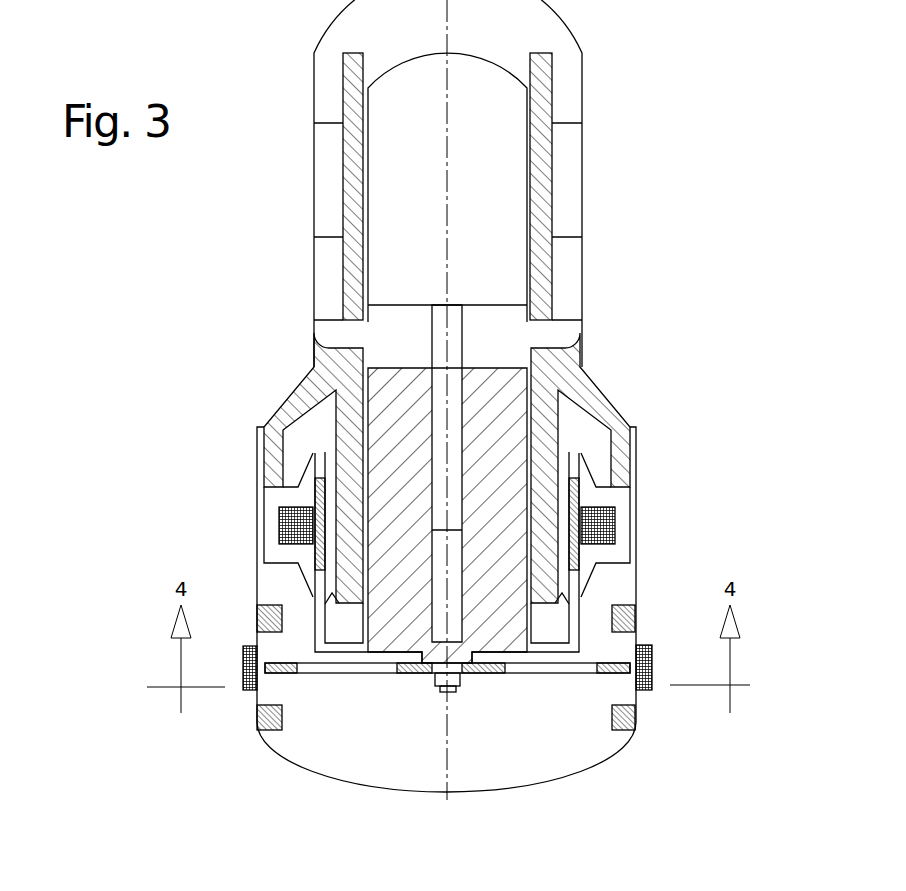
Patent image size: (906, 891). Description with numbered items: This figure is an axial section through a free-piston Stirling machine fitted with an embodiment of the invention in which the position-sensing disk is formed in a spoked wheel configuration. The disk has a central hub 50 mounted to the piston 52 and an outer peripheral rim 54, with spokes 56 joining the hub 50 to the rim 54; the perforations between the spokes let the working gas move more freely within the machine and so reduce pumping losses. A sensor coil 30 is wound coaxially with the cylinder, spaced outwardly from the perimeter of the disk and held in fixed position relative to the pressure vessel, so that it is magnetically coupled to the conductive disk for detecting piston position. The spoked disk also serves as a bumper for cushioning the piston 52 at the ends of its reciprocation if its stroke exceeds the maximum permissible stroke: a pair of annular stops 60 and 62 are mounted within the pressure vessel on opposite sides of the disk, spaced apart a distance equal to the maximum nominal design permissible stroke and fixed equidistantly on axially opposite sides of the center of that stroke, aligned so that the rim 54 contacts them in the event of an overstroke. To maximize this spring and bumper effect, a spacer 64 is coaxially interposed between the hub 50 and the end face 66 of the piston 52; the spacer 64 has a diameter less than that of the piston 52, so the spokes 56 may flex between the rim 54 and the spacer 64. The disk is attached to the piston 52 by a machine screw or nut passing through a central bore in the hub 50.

The sensor coil 30 is at (243, 645).
The central hub 50 is at (433, 657).
The piston 52 is at (490, 407).
The outer peripheral rim 54 is at (630, 675).
The spokes 56 is at (330, 667).
The annular stop 60 is at (625, 720).
The annular stop 62 is at (633, 607).
The spacer 64 is at (437, 674).
The end face 66 is at (378, 645).